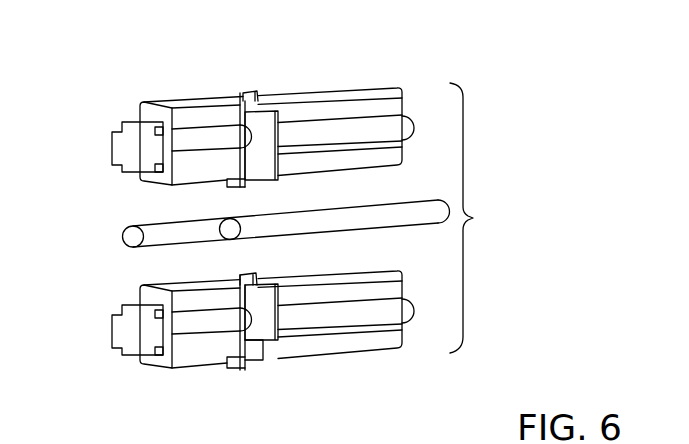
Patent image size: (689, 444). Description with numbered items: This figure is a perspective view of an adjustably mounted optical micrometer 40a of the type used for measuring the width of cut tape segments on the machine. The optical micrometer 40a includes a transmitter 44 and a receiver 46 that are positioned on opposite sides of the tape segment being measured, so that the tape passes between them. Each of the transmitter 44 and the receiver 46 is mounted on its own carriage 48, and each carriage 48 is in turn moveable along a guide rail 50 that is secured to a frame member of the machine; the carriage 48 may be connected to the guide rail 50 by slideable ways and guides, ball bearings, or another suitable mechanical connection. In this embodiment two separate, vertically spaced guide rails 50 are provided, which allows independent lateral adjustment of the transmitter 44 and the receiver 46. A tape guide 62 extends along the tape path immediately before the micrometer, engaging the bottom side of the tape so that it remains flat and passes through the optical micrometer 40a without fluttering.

The optical micrometer 40a is at (485, 218).
The transmitter 44 is at (257, 163).
The receiver 46 is at (262, 320).
The carriage 48 is at (242, 104).
The guide rail 50 is at (377, 106).
The tape guide 62 is at (223, 230).